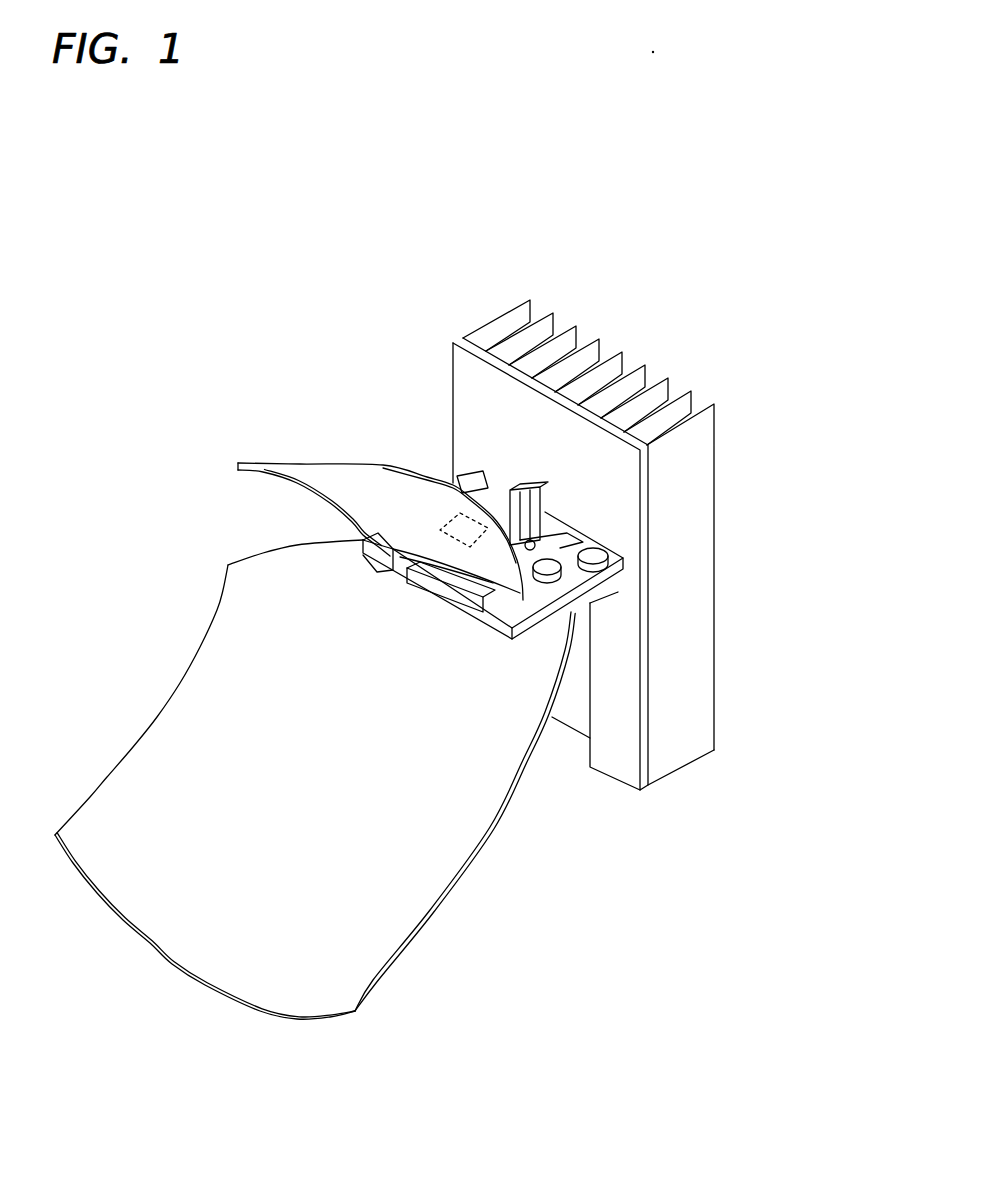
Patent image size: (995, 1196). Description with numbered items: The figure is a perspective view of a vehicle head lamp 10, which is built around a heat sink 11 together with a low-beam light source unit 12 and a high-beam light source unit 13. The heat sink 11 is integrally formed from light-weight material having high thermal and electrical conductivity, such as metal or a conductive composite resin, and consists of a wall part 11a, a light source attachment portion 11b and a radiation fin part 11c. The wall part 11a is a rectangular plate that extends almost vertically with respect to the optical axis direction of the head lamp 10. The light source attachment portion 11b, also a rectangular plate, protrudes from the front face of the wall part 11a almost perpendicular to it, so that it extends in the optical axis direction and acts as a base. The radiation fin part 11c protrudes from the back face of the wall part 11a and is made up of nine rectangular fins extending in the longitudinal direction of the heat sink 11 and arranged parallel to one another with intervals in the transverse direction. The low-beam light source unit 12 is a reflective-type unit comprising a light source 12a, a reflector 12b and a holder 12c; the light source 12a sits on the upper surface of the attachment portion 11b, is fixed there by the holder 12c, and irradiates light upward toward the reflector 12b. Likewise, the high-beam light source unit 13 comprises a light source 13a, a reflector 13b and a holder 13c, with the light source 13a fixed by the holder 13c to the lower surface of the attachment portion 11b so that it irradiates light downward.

The vehicle head lamp 10 is at (768, 260).
The heat sink 11 is at (799, 472).
The wall part 11a is at (641, 496).
The light source attachment portion 11b is at (618, 568).
The radiation fin part 11c is at (706, 596).
The low-beam light source unit 12 is at (265, 402).
The light source 12a is at (449, 520).
The reflector 12b is at (268, 462).
The holder 12c is at (447, 470).
The high-beam light source unit 13 is at (655, 892).
The light source 13a is at (539, 634).
The reflector 13b is at (497, 827).
The holder 13c is at (610, 603).